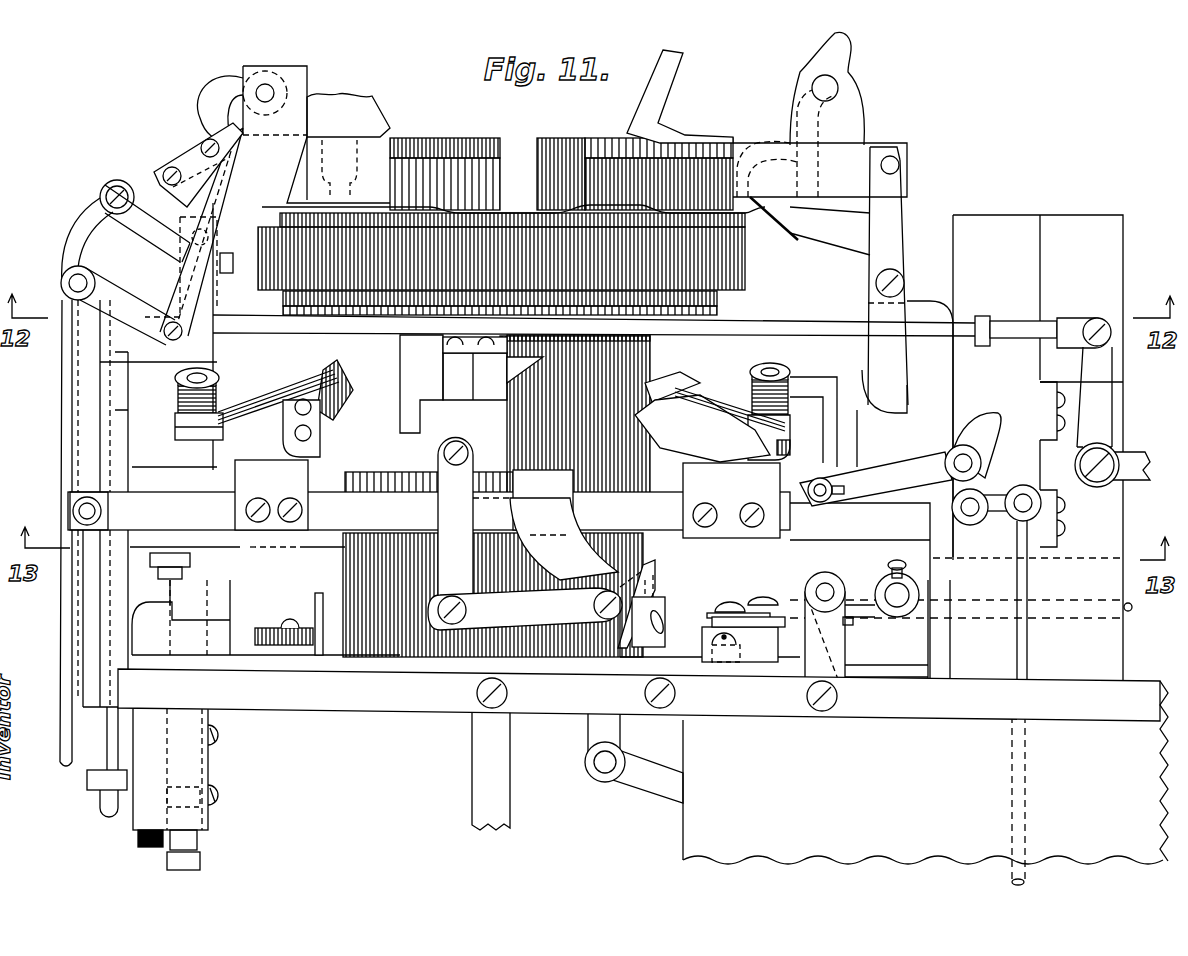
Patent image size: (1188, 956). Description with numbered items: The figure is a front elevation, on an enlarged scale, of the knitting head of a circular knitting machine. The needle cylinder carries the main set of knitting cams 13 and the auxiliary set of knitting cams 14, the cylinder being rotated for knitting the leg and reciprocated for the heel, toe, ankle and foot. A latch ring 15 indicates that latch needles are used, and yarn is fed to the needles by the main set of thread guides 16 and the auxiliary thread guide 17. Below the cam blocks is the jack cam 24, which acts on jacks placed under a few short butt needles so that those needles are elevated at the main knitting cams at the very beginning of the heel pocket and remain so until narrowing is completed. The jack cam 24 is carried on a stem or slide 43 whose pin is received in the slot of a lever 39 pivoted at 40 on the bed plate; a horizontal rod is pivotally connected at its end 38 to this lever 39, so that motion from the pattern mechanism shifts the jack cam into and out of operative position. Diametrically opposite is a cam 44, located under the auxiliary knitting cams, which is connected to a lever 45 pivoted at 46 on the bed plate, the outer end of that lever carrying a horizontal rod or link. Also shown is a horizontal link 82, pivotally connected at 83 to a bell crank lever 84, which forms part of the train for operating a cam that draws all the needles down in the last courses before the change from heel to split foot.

The main set of knitting cams 13 is at (713, 378).
The auxiliary set of knitting cams 14 is at (318, 372).
The latch ring 15 is at (536, 147).
The main set of thread guides 16 is at (855, 130).
The auxiliary thread guide 17 is at (338, 96).
The jack cam 24 is at (657, 578).
The end of rod 38 is at (762, 600).
The lever 39 is at (712, 615).
The pivot 40 is at (727, 609).
The stem or slide of the jack cam 43 is at (678, 652).
The cam 44 is at (318, 596).
The lever 45 is at (277, 630).
The pivot 46 is at (290, 626).
The horizontal link 82 is at (788, 328).
The pivotal connection 83 is at (1094, 318).
The bell crank lever 84 is at (1138, 458).